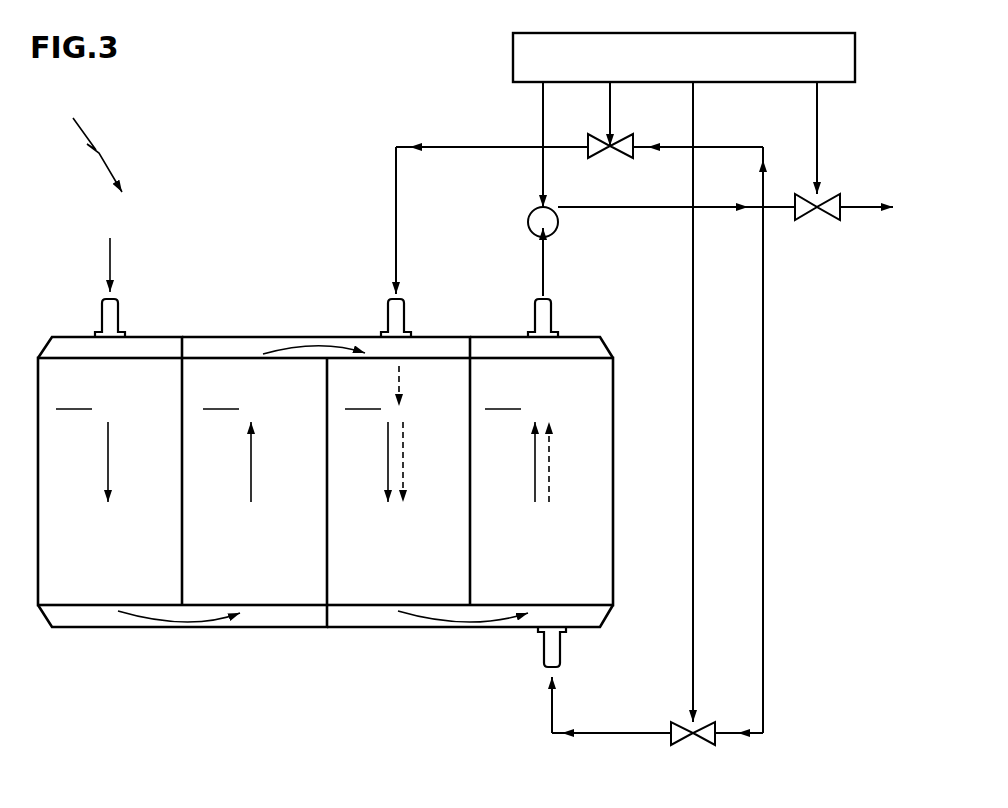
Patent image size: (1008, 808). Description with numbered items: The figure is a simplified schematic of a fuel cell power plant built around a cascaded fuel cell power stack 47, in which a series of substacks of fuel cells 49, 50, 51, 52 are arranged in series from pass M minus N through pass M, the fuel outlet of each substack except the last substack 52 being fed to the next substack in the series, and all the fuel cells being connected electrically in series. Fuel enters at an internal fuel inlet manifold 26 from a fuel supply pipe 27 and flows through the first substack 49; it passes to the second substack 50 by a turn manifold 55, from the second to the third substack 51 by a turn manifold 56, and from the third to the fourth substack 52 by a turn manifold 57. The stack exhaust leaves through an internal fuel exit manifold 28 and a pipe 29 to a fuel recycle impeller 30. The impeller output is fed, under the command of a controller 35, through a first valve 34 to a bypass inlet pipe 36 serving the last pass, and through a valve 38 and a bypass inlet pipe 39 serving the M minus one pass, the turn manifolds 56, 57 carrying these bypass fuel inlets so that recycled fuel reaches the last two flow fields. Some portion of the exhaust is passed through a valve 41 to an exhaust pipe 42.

The internal fuel inlet manifold 26 is at (85, 344).
The fuel supply pipe 27 is at (104, 327).
The internal fuel exit manifold 28 is at (590, 351).
The pipe 29 is at (537, 318).
The fuel recycle impeller 30 is at (553, 219).
The first valve 34 is at (695, 745).
The controller 35 is at (826, 34).
The bypass inlet pipe 36 is at (560, 657).
The valve 38 is at (612, 158).
The bypass inlet pipe 39 is at (400, 318).
The valve 41 is at (820, 221).
The exhaust pipe 42 is at (862, 206).
The cascaded fuel cell power stack 47 is at (81, 142).
The first substack 49 is at (96, 481).
The second substack 50 is at (233, 481).
The third substack 51 is at (379, 481).
The last substack 52 is at (520, 481).
The turn manifold 55 is at (268, 617).
The turn manifold 56 is at (228, 344).
The turn manifold 57 is at (360, 617).